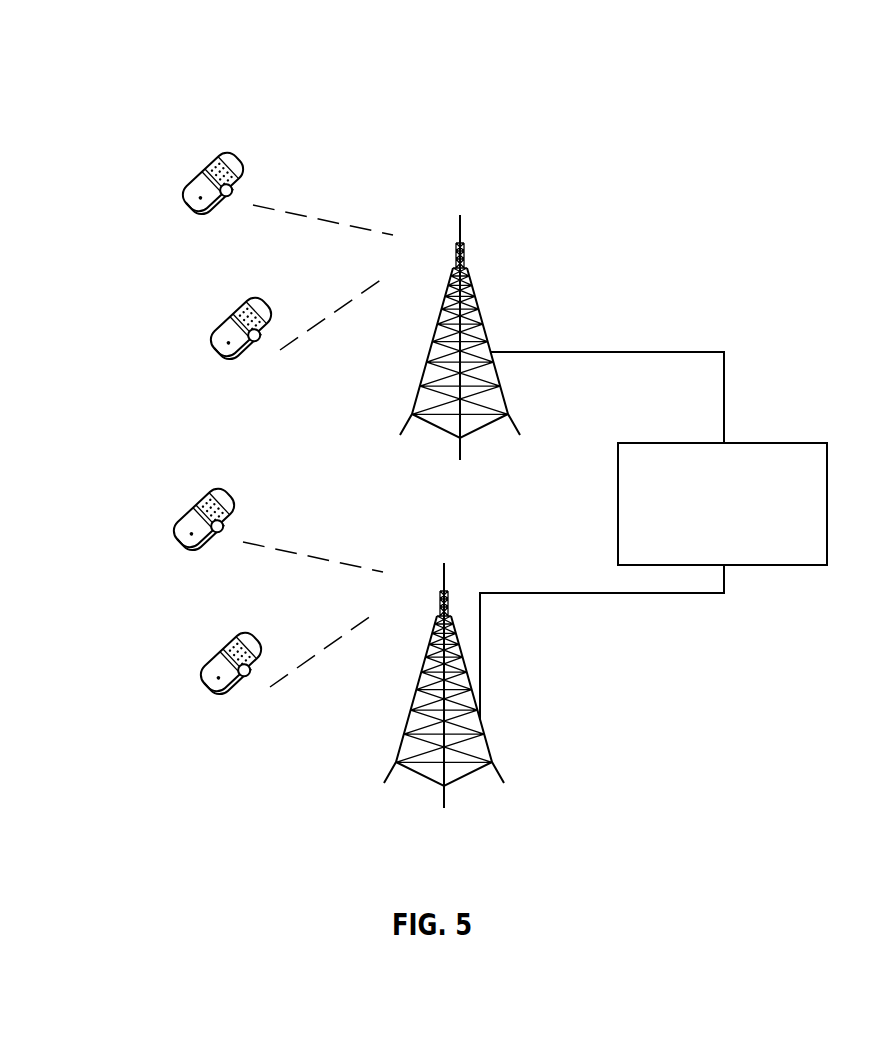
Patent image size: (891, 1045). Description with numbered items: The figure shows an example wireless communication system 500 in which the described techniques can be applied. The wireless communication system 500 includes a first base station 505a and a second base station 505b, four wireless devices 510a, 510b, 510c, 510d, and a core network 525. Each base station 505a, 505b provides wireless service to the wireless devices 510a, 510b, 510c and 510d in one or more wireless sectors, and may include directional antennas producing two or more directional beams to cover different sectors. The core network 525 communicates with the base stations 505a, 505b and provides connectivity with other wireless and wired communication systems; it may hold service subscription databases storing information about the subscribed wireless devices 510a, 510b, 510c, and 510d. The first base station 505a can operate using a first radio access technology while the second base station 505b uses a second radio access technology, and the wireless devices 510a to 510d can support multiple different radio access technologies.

The wireless communication system 500 is at (596, 57).
The first base station 505a is at (477, 297).
The second base station 505b is at (445, 593).
The wireless device 510a is at (210, 157).
The wireless device 510b is at (239, 302).
The wireless device 510c is at (153, 513).
The wireless device 510d is at (229, 637).
The core network 525 is at (634, 441).